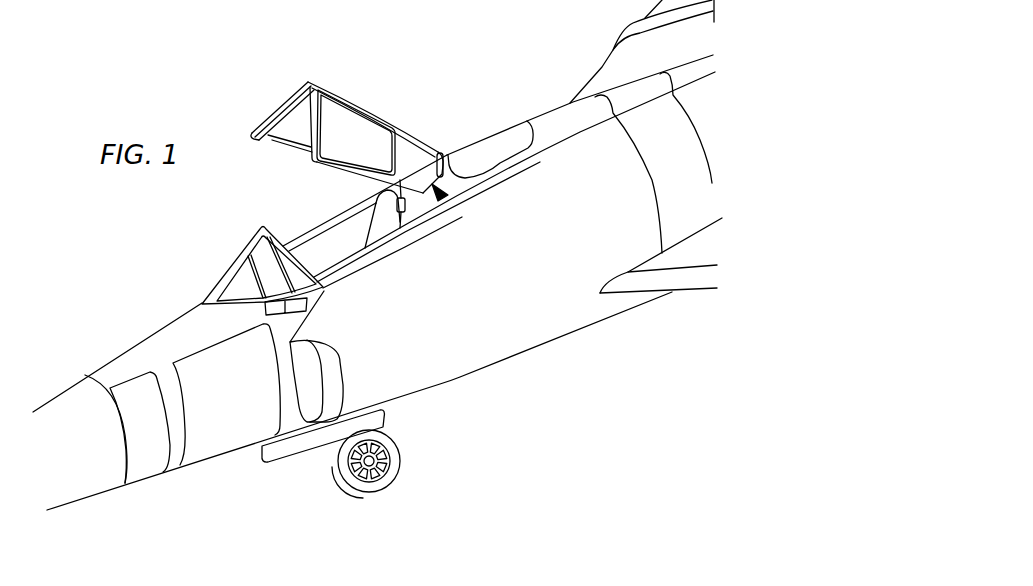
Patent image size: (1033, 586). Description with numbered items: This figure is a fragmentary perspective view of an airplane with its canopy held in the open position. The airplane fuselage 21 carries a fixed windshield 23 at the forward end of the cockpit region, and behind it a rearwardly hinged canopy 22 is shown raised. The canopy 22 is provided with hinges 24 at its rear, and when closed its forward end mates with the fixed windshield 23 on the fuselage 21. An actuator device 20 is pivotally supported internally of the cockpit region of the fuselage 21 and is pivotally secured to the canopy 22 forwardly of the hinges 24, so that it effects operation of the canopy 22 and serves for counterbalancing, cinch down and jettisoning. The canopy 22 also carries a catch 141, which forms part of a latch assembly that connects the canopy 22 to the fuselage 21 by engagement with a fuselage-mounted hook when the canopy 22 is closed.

The actuator device 20 is at (441, 212).
The airplane fuselage 21 is at (517, 330).
The canopy 22 is at (354, 107).
The fixed windshield 23 is at (247, 268).
The hinges 24 is at (438, 154).
The catch 141 is at (270, 139).